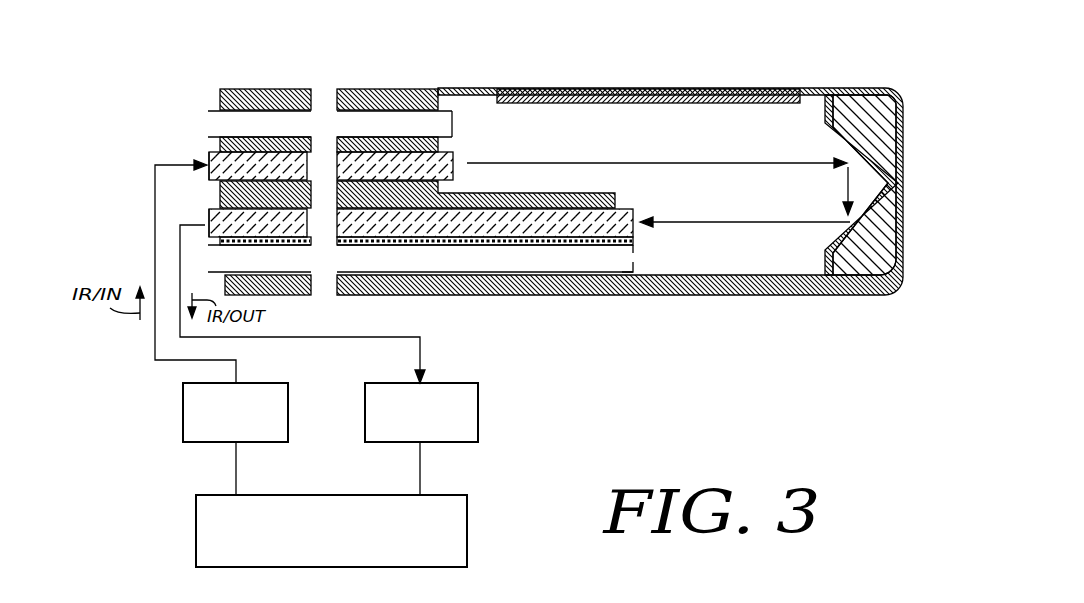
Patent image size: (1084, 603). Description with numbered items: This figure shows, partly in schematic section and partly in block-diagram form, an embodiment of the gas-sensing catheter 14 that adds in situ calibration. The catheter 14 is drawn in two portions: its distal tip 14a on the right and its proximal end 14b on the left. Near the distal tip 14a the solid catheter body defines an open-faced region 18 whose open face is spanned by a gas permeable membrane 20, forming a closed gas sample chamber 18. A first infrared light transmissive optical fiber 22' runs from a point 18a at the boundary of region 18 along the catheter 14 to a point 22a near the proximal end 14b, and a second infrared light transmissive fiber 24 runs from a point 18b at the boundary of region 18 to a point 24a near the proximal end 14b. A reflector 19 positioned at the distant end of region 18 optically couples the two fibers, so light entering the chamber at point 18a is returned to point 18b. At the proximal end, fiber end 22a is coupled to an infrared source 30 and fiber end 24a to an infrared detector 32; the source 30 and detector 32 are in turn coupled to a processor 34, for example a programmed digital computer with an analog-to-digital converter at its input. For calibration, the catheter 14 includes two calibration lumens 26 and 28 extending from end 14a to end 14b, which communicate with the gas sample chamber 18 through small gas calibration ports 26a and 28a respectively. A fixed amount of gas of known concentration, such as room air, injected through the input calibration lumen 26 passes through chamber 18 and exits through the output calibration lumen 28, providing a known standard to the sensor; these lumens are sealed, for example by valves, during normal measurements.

The catheter 14 is at (417, 88).
The distal tip 14a is at (898, 48).
The proximal end 14b is at (198, 50).
The open-faced region 18 is at (680, 137).
The point at boundary of region 18a is at (458, 153).
The point at boundary of region 18b is at (635, 208).
The reflector 19 is at (872, 163).
The gas permeable membrane 20 is at (690, 88).
The connector IR input fiber 22' is at (260, 122).
The point near proximal end 22a is at (205, 150).
The second infrared light transmissive fiber 24 is at (260, 227).
The point near proximal end 24a is at (205, 215).
The input calibration lumen 26 is at (372, 122).
The gas calibration port 26a is at (462, 123).
The output calibration lumen 28 is at (537, 256).
The gas calibration port 28a is at (640, 253).
The infrared source 30 is at (183, 418).
The infrared detector 32 is at (480, 404).
The processor 34 is at (467, 527).